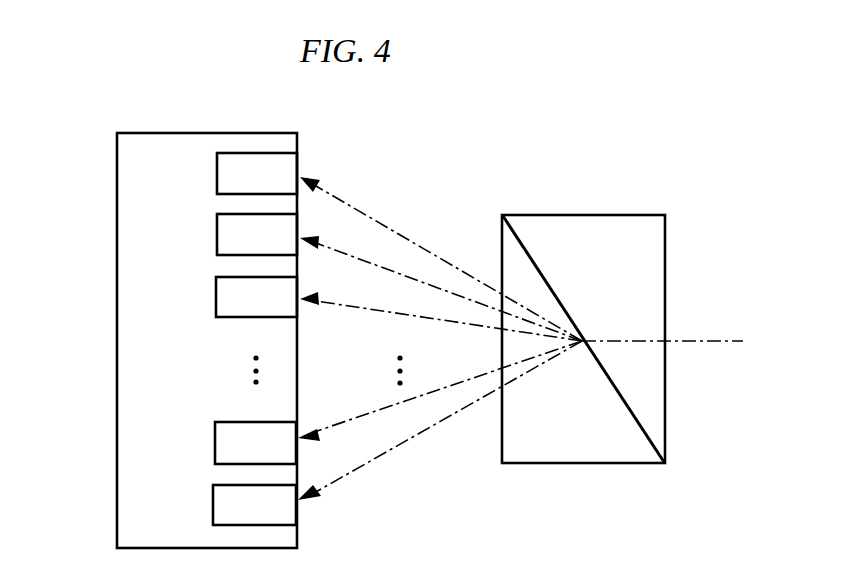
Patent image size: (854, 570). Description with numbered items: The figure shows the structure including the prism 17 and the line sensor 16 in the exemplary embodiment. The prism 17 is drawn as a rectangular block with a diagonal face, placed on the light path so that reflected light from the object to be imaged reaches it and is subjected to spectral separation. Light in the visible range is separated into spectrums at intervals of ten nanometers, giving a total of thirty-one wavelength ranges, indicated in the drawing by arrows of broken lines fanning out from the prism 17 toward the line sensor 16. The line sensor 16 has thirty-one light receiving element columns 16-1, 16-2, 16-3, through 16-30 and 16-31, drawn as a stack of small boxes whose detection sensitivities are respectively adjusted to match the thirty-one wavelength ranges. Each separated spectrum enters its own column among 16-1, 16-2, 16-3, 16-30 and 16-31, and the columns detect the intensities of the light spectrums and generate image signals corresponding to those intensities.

The line sensor 16 is at (117, 218).
The light receiving element column 16-1 is at (217, 171).
The light receiving element column 16-2 is at (217, 223).
The light receiving element column 16-3 is at (216, 285).
The light receiving element column 16-30 is at (215, 428).
The light receiving element column 16-31 is at (213, 499).
The prism 17 is at (608, 215).